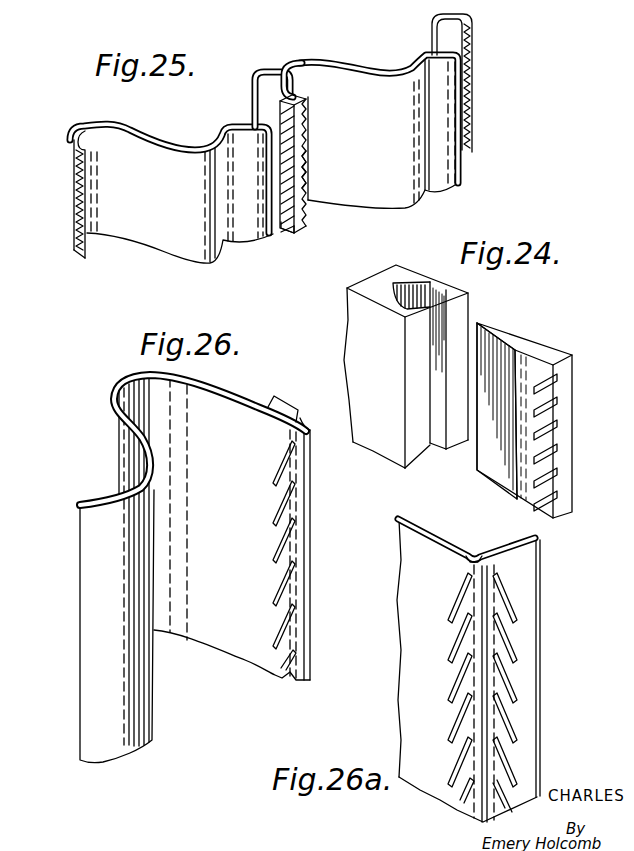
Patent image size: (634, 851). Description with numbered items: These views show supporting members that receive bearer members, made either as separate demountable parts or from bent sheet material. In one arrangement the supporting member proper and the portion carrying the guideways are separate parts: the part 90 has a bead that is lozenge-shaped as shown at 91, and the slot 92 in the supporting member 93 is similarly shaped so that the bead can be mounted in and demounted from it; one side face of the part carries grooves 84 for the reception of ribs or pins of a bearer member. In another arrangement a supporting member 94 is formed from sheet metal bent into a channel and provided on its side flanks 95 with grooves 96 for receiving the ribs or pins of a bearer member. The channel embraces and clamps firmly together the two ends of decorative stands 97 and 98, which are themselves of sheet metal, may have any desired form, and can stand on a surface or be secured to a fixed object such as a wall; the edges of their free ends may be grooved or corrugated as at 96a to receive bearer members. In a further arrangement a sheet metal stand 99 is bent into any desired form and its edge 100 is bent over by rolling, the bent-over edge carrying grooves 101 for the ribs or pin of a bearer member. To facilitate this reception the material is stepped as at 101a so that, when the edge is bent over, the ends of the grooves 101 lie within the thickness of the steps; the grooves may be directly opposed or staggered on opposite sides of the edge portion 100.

In FIG. 24, the grooves 84 is at (550, 425).
In FIG. 24, the part 90 is at (543, 351).
In FIG. 24, the lozenge-shaped bead 91 is at (500, 331).
In FIG. 24, the slot 92 is at (447, 293).
In FIG. 24, the supporting member 93 is at (399, 275).
In FIG. 25, the supporting member 94 is at (303, 144).
In FIG. 25, the side flanks 95 is at (289, 214).
In FIG. 25, the grooves 96 is at (300, 183).
In FIG. 25, the grooved edges 96a is at (77, 232).
In FIG. 25, the decorative stand 97 is at (258, 73).
In FIG. 25, the decorative stand 98 is at (286, 62).
In FIG. 26, the sheet metal stand 99 is at (222, 400).
In FIG. 26A, the sheet metal stand 99 is at (402, 558).
In FIG. 26, the edge 100 is at (273, 397).
In FIG. 26, the grooves 101 is at (276, 603).
In FIG. 26A, the grooves 101 is at (515, 653).
In FIG. 26, the step 101a is at (303, 412).
In FIG. 26A, the step 101a is at (492, 557).